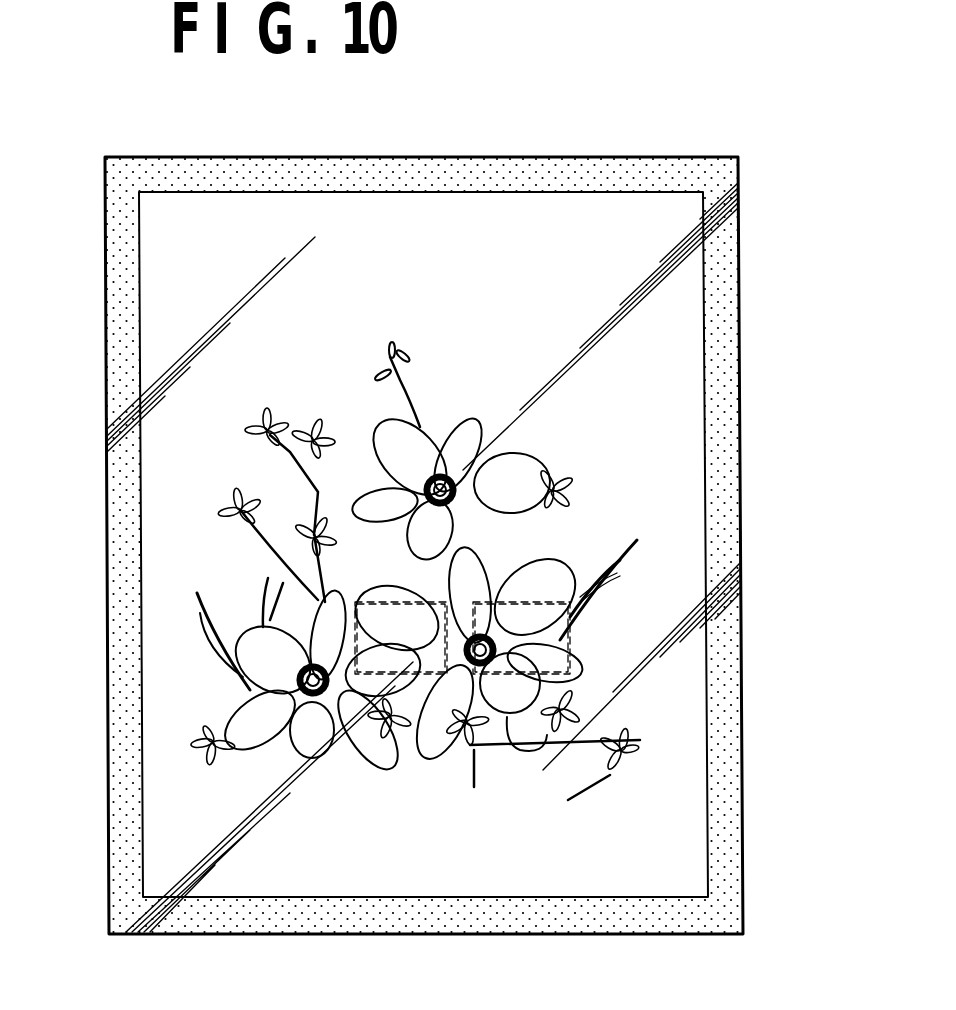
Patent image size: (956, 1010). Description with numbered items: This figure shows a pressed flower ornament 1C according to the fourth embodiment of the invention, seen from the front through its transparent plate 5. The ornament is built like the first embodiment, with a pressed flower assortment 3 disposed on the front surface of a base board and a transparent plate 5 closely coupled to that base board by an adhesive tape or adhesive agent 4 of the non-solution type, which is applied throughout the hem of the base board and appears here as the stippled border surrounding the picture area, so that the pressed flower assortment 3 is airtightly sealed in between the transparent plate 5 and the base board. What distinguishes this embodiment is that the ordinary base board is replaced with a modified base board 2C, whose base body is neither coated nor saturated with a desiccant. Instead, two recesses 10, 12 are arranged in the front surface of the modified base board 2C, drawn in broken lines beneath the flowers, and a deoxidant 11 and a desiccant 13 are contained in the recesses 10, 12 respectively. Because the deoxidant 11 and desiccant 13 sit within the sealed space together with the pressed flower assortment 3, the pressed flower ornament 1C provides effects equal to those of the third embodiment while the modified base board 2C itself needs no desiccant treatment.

The pressed flower ornament 1C is at (810, 213).
The modified base board 2C is at (683, 842).
The pressed flower assortment 3 is at (545, 462).
The adhesive tape or adhesive agent 4 is at (118, 308).
The transparent plate 5 is at (468, 248).
The recess 10 is at (362, 600).
The deoxidant 11 is at (370, 648).
The recess 12 is at (545, 602).
The desiccant 13 is at (572, 637).